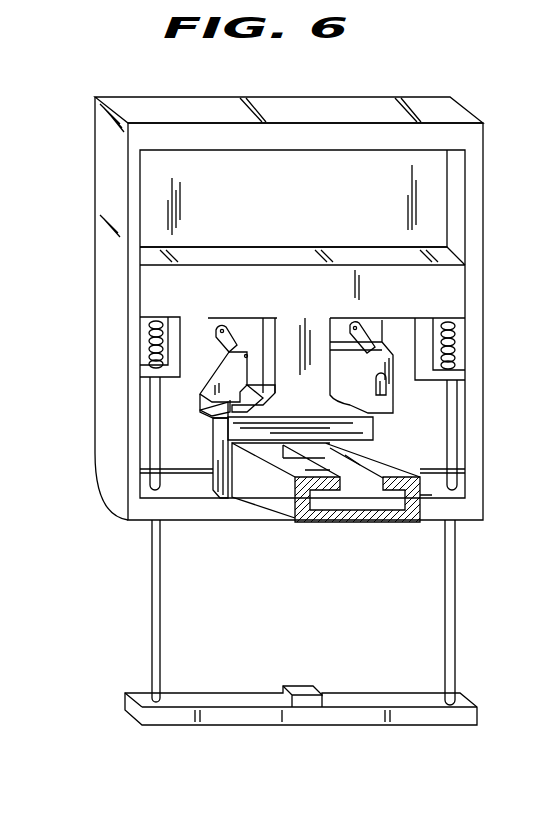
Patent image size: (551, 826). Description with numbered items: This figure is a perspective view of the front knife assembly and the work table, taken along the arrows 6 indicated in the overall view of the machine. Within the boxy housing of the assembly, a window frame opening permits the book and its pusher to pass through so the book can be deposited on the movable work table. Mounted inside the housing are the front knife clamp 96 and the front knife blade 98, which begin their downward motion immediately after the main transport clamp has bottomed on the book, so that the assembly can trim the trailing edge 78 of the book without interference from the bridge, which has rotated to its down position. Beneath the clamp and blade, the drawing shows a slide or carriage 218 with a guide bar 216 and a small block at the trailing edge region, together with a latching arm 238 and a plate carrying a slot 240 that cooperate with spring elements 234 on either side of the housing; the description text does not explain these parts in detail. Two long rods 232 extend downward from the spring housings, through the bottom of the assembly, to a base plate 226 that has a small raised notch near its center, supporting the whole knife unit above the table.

The housing 6 is at (483, 277).
The front knife clamp 96 is at (363, 231).
The front knife blade 98 is at (389, 351).
The spring 234 is at (148, 345).
The gripper arm 238 is at (229, 337).
The slot 240 is at (387, 390).
The trailing edge 78 is at (211, 420).
The guide bar 216 is at (226, 442).
The slide carriage 218 is at (202, 513).
The rod 232 is at (151, 600).
The base plate 226 is at (315, 718).